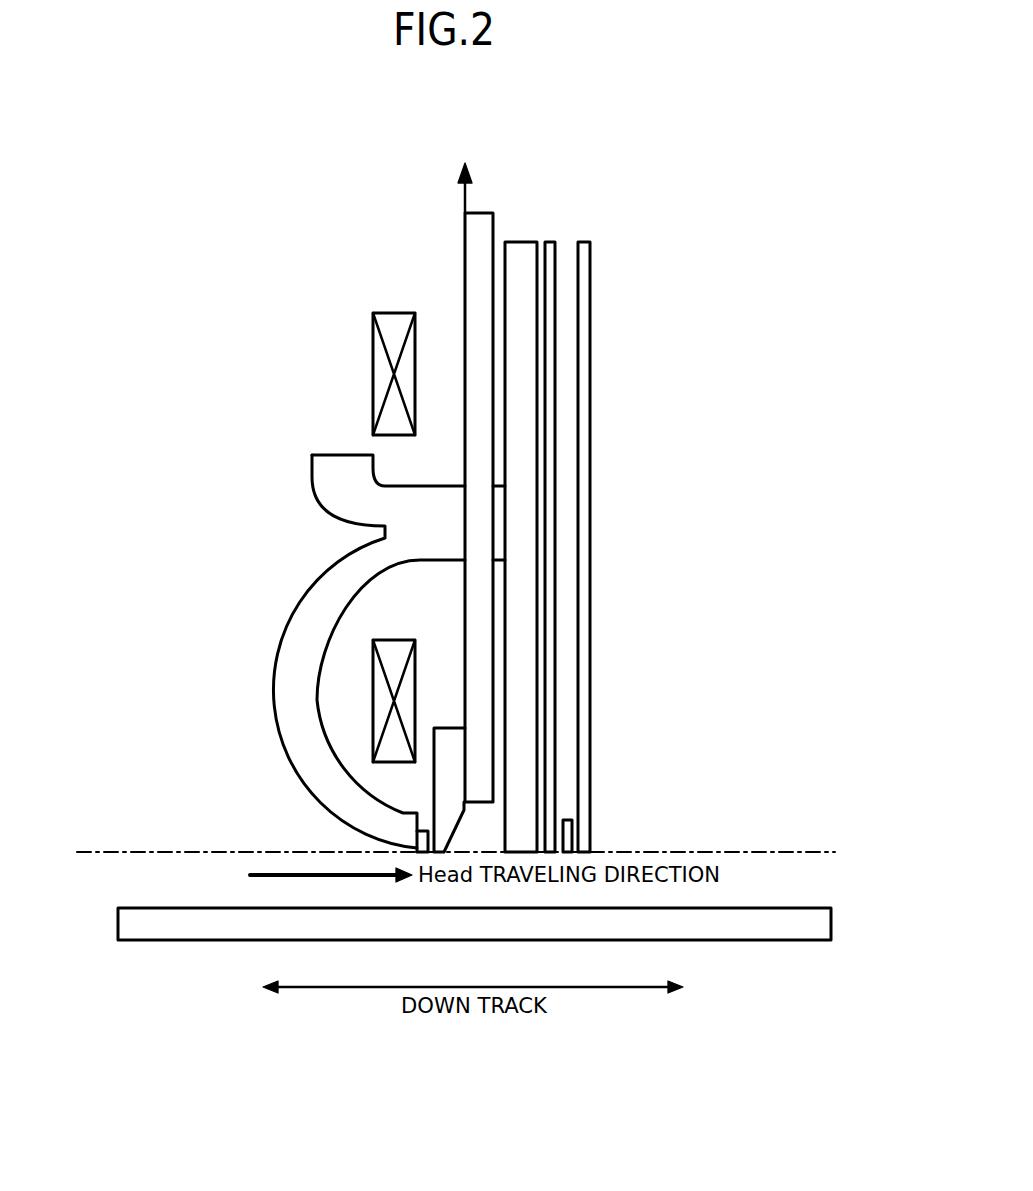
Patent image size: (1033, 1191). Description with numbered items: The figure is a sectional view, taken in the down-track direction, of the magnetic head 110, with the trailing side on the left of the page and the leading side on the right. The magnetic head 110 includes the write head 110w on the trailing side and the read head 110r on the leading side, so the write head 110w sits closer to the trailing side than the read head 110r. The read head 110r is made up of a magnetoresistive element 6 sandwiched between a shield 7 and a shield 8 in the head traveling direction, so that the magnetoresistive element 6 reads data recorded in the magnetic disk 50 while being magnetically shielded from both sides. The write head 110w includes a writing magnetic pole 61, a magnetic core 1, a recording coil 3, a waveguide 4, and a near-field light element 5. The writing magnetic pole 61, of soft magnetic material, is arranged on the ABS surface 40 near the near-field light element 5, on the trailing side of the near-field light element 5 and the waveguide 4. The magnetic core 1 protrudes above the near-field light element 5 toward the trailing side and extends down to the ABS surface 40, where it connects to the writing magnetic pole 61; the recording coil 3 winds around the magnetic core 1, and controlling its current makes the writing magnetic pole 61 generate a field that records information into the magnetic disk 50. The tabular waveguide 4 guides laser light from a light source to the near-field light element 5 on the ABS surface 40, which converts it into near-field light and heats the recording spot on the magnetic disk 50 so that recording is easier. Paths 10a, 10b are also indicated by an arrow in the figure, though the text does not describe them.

The magnetic head 110 is at (651, 157).
The write head 110w is at (201, 594).
The read head 110r is at (661, 721).
The magnetic core 1 is at (300, 601).
The recording coil 3 is at (373, 351).
The waveguide 4 is at (478, 212).
The near-field light element 5 is at (434, 782).
The writing magnetic pole 61 is at (423, 831).
The magnetic flux path 10a is at (327, 584).
The magnetic flux path 10b is at (452, 626).
The shield 7 is at (550, 726).
The shield 8 is at (590, 778).
The magnetoresistive element 6 is at (572, 833).
The ABS surface 40 is at (106, 855).
The magnetic disk 50 is at (160, 928).